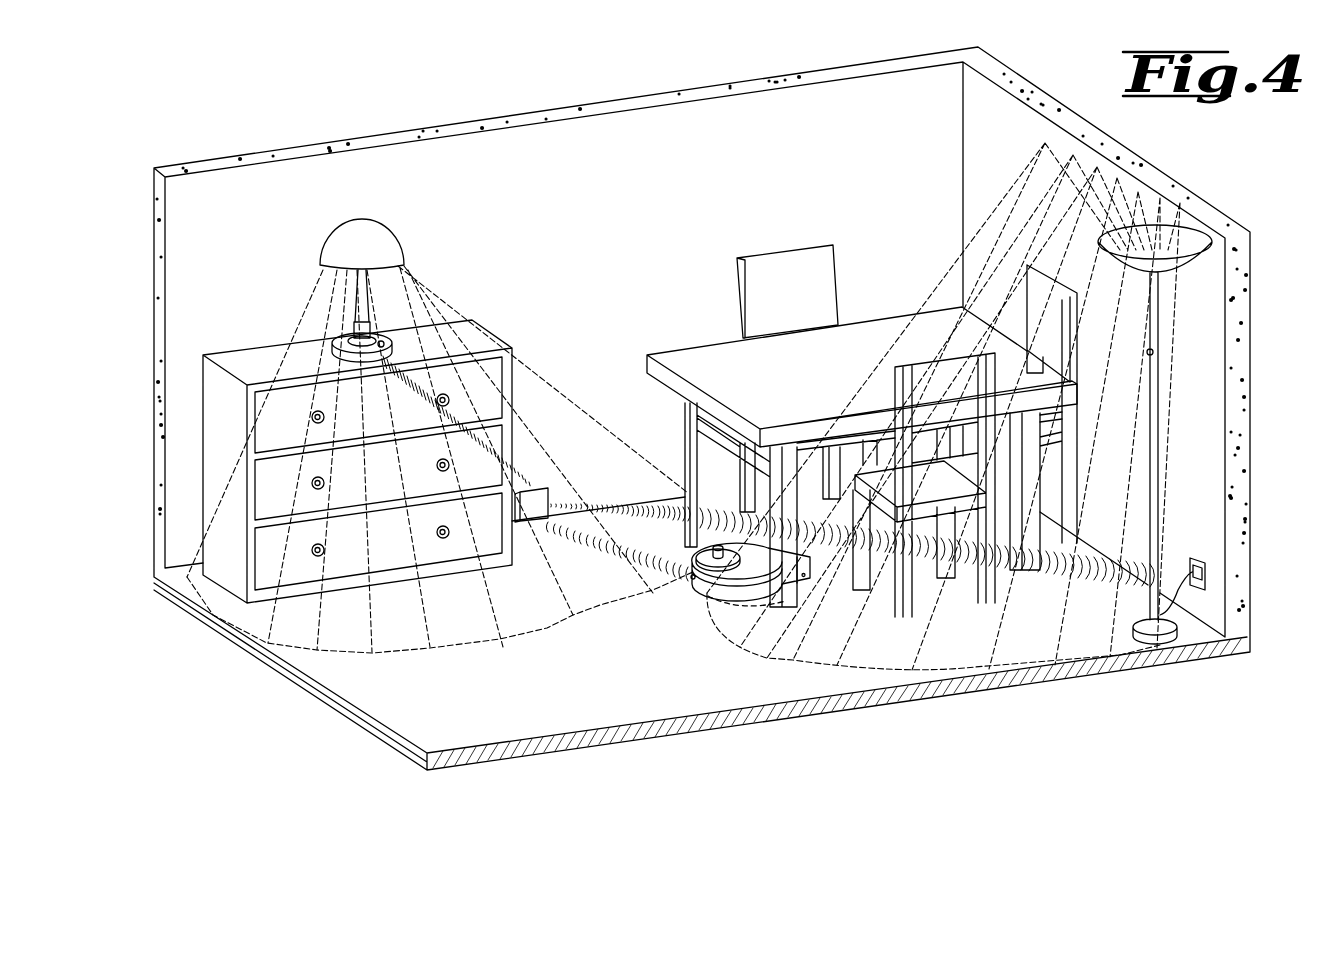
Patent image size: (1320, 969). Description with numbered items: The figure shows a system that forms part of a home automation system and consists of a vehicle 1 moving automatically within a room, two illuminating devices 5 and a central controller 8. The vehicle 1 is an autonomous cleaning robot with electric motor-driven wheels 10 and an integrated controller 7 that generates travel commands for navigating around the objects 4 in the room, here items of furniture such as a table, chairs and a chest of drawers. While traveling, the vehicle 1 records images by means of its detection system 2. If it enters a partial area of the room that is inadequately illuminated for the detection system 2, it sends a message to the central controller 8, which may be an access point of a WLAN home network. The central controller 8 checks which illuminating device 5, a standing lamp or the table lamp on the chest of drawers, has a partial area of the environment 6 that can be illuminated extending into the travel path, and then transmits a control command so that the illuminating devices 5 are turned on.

The vehicle 1 is at (693, 583).
The detection system 2 is at (714, 561).
The objects 4 is at (270, 355).
The illuminating devices 5 is at (358, 313).
The partial area of the environment 6 is at (793, 658).
The controller 7 is at (748, 572).
The central controller 8 is at (548, 490).
The electric motor-driven wheels 10 is at (772, 582).